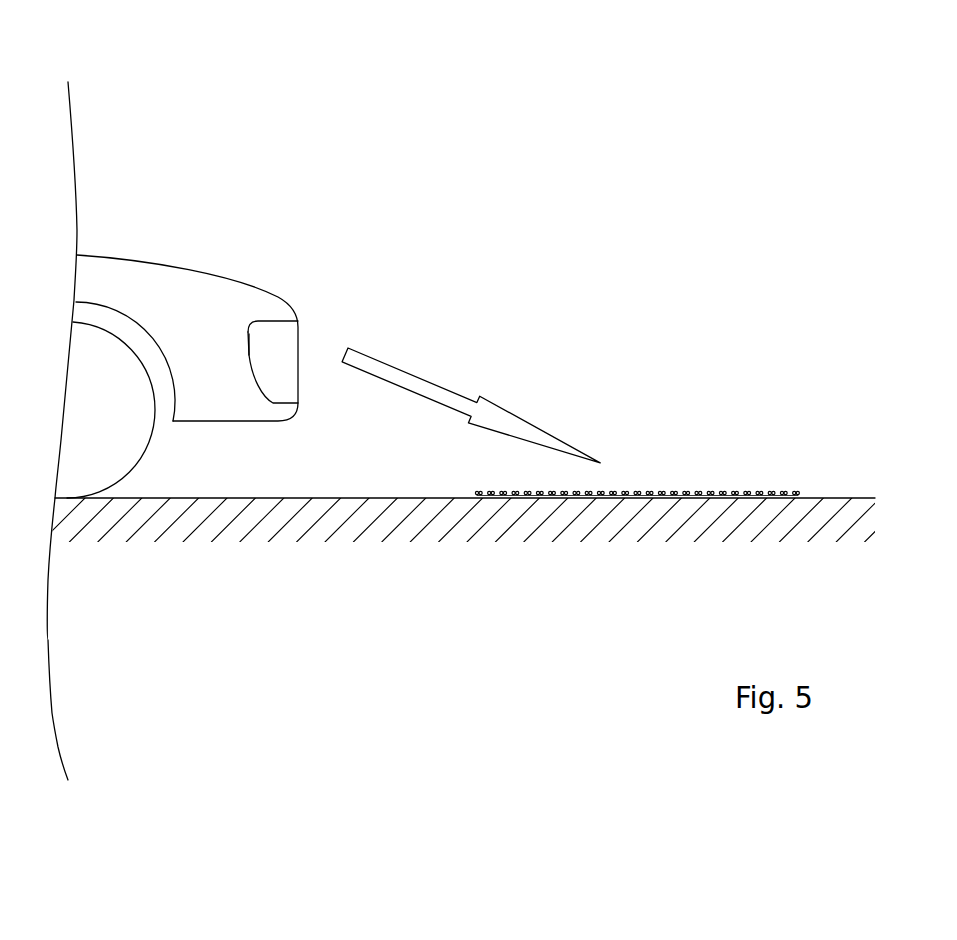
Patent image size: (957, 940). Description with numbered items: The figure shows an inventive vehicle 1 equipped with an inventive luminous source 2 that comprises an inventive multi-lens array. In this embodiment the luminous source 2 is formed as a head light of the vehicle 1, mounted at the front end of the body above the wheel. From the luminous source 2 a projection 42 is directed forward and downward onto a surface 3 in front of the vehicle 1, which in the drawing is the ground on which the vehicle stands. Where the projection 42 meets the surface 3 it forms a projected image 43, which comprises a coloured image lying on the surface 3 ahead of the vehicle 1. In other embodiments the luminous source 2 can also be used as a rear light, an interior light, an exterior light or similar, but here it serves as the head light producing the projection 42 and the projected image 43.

The vehicle 1 is at (197, 87).
The luminous source 2 is at (273, 337).
The projection 42 is at (408, 387).
The projected image 43 is at (690, 492).
The surface 3 is at (825, 507).